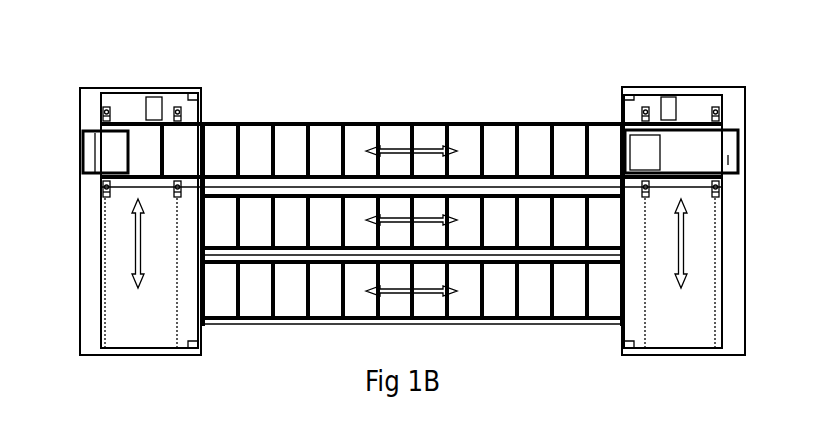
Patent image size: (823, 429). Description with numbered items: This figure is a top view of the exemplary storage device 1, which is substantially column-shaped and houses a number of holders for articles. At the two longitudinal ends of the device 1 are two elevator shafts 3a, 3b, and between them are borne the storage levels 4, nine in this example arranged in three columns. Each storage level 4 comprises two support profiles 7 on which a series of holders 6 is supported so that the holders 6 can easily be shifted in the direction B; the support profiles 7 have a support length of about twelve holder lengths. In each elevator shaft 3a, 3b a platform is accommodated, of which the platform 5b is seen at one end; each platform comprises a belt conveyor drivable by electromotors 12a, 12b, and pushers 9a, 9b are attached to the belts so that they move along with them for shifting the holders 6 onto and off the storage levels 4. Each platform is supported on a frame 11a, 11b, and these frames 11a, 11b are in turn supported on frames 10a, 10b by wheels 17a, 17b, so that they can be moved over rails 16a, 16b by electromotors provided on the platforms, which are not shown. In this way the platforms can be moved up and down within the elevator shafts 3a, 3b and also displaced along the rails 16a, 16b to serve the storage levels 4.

The device 1 is at (508, 100).
The elevator shaft 3a is at (106, 92).
The elevator shaft 3b is at (708, 93).
The storage level 4 is at (353, 120).
The platform 5b is at (698, 120).
The holder 6 is at (143, 157).
The support profile 7 is at (287, 178).
The pusher 9a is at (110, 153).
The pusher 9b is at (681, 151).
The frame 10a is at (138, 355).
The frame 10b is at (727, 258).
The frame 11a is at (128, 195).
The frame 11b is at (690, 185).
The electromotor 12a is at (180, 145).
The electromotor 12b is at (667, 97).
The rail 16a is at (198, 297).
The rail 16b is at (718, 318).
The wheel 17a is at (100, 188).
The wheel 17b is at (718, 105).
The direction B is at (417, 147).